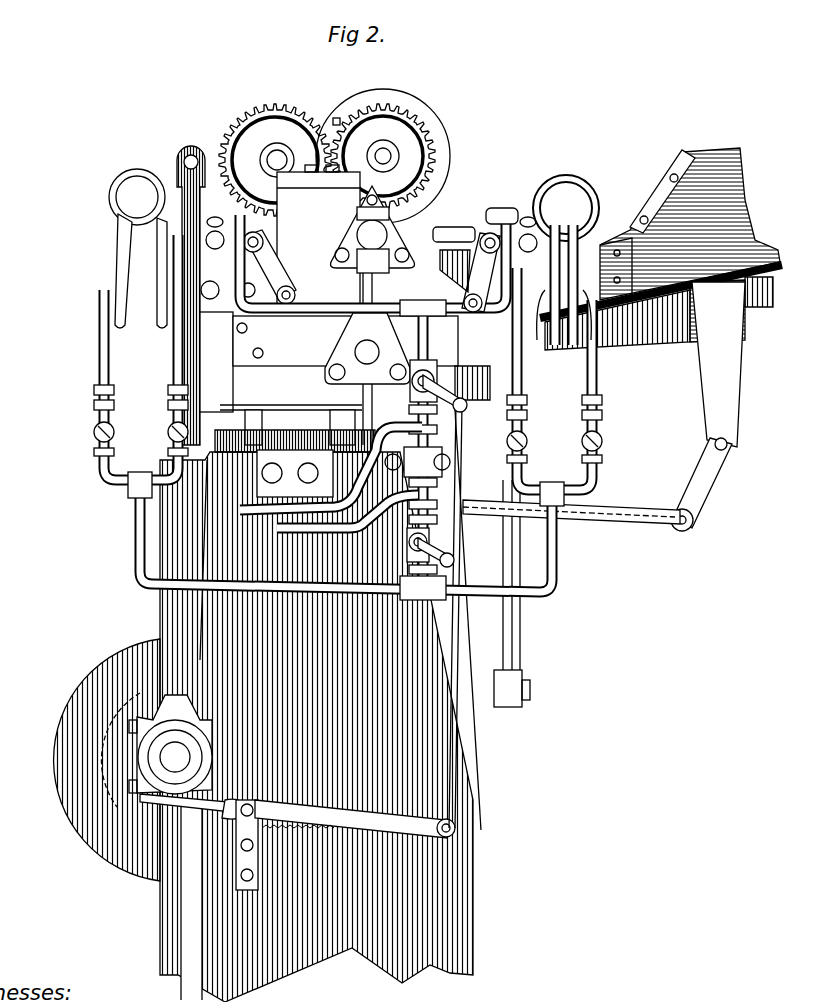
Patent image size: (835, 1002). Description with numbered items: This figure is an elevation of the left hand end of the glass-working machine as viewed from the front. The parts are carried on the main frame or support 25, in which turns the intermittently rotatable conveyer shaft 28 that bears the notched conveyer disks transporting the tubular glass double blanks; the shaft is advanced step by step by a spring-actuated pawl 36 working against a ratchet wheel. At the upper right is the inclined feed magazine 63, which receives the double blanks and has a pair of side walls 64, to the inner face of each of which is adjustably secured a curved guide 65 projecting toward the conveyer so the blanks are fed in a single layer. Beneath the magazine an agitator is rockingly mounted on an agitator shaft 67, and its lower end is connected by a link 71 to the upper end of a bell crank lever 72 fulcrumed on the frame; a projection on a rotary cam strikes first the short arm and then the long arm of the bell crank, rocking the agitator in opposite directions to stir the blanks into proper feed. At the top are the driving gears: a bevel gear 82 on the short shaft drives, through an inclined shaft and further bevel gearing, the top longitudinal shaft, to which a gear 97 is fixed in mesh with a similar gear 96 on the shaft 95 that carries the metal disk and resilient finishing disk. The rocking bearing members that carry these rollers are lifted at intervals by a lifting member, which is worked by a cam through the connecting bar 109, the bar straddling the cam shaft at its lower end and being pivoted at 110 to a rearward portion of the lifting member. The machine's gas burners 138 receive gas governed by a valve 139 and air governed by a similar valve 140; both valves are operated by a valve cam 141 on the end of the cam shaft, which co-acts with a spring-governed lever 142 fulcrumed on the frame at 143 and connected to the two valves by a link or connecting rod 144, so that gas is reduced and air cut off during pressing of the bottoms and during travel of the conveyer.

The main frame 25 is at (320, 706).
The conveyer shaft 28 is at (355, 352).
The spring-actuated pawl 36 is at (180, 752).
The feed magazine 63 is at (661, 249).
The side walls 64 is at (715, 152).
The curved guide 65 is at (552, 195).
The agitator shaft 67 is at (715, 444).
The link 71 is at (694, 483).
The bell crank lever 72 is at (623, 511).
The bevel gear 82 is at (277, 150).
The shaft 95 is at (392, 155).
The gear 96 is at (408, 120).
The gear 97 is at (266, 112).
The connecting bar 109 is at (124, 222).
The pivot 110 is at (191, 160).
The gas burners 138 is at (459, 230).
The valve 139 is at (407, 548).
The valve 140 is at (431, 371).
The valve cam 141 is at (170, 744).
The spring-governed lever 142 is at (325, 810).
The fulcrum 143 is at (250, 808).
The link or connecting rod 144 is at (448, 686).